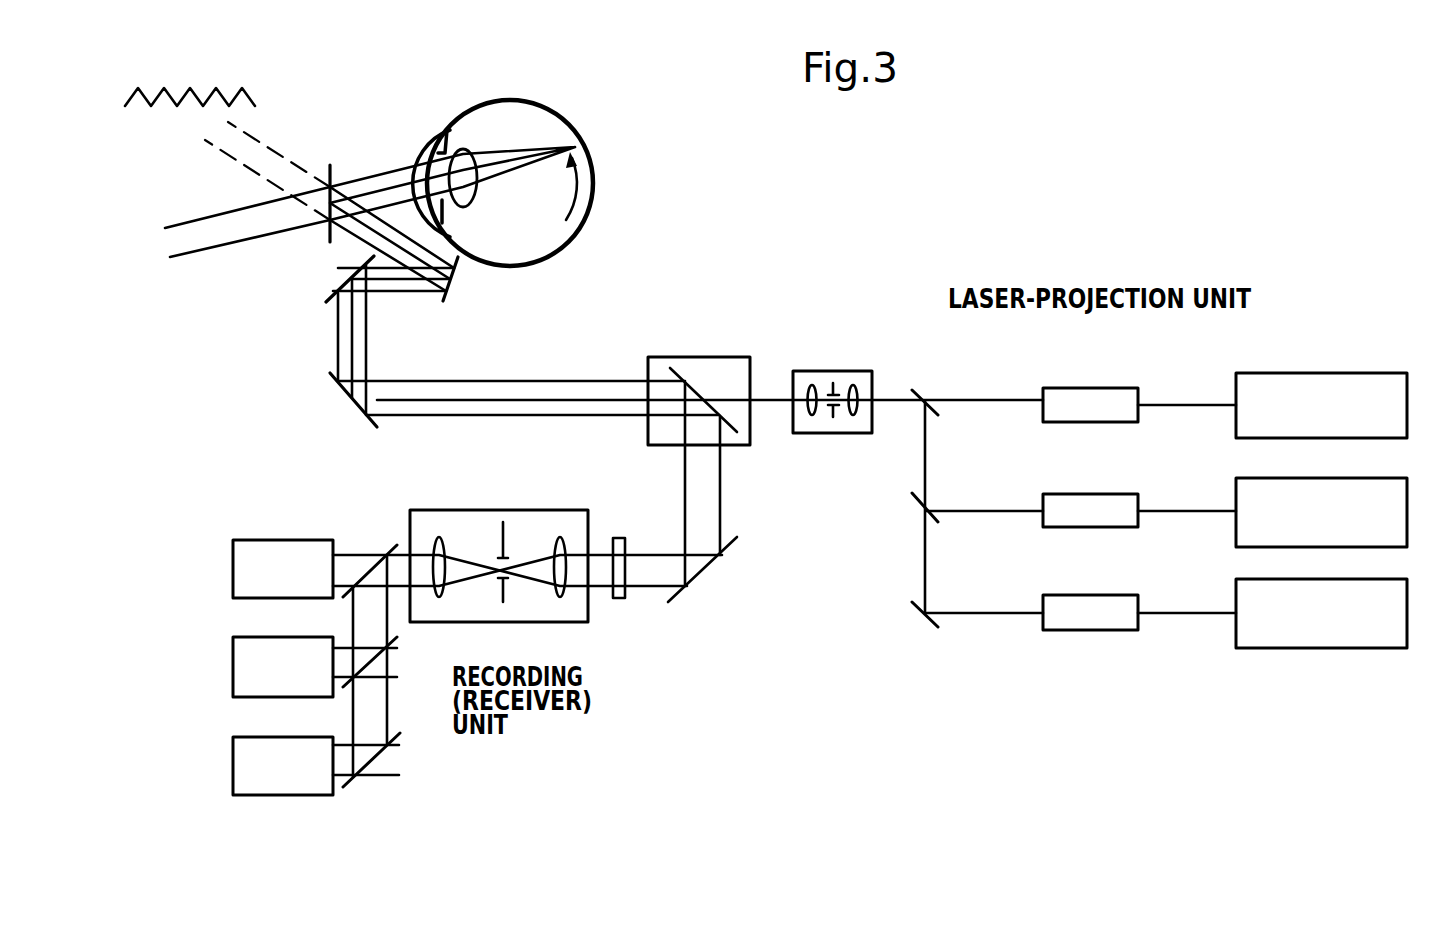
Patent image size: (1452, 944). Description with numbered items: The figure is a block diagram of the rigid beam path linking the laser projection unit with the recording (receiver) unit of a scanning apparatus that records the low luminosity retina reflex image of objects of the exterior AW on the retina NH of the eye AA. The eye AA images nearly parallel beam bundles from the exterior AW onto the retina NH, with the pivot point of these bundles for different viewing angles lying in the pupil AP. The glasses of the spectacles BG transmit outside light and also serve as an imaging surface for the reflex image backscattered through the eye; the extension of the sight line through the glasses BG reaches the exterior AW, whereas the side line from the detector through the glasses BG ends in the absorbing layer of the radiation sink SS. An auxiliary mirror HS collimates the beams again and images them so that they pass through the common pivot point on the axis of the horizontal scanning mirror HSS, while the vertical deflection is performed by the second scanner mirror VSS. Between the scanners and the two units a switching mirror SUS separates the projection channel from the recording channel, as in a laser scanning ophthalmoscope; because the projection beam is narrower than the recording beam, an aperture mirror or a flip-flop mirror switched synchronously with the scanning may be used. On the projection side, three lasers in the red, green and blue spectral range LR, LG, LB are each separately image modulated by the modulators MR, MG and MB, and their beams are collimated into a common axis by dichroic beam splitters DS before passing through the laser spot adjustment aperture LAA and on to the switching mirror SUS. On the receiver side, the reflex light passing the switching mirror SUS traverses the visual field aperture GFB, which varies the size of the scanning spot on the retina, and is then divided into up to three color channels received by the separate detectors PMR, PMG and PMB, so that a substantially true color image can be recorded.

The radiation sink SS is at (190, 73).
The exterior AW is at (243, 206).
The glasses of the spectacles BG is at (273, 172).
The horizontal scanning mirror HSS is at (323, 276).
The auxiliary mirror HS is at (467, 296).
The vertical scanning mirror VSS is at (326, 379).
The eye AA is at (509, 100).
The pupil AP is at (444, 152).
The retina NH is at (589, 198).
The switching mirror SUS is at (699, 376).
The laser spot adjustment aperture LAA is at (832, 370).
The dichroic beam splitter DS is at (640, 564).
The red image modulator MR is at (1090, 378).
The green image modulator MG is at (1090, 485).
The blue image modulator MB is at (1090, 588).
The red laser LR is at (1337, 405).
The green laser LG is at (1337, 512).
The blue laser LB is at (1337, 613).
The visual field aperture GFB is at (503, 522).
The red detector PMR is at (251, 569).
The green detector PMG is at (251, 667).
The blue detector PMB is at (251, 766).